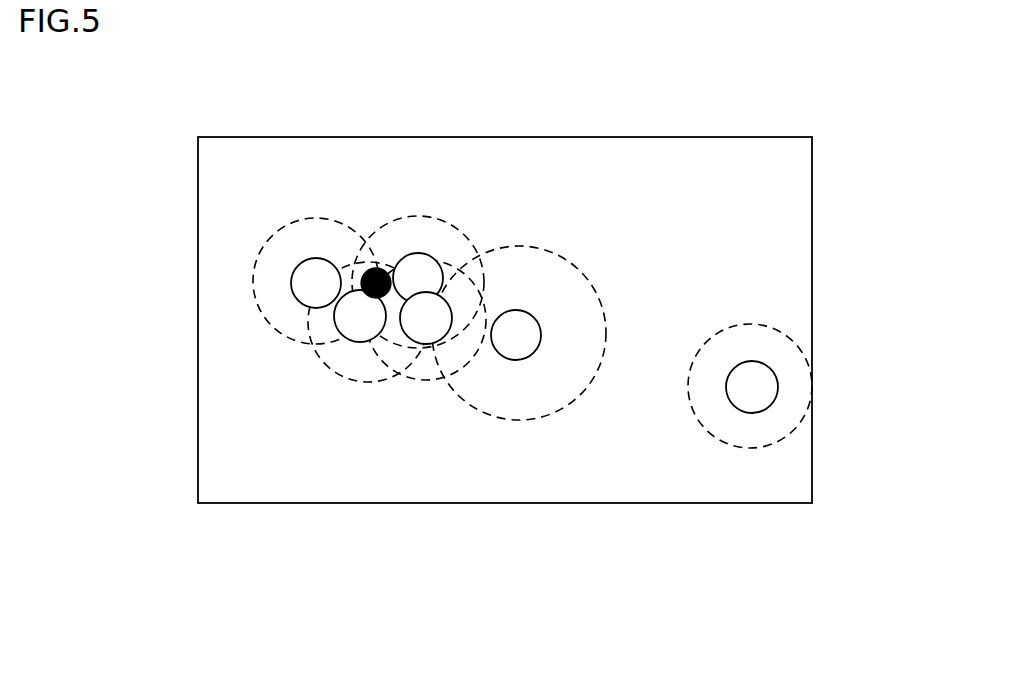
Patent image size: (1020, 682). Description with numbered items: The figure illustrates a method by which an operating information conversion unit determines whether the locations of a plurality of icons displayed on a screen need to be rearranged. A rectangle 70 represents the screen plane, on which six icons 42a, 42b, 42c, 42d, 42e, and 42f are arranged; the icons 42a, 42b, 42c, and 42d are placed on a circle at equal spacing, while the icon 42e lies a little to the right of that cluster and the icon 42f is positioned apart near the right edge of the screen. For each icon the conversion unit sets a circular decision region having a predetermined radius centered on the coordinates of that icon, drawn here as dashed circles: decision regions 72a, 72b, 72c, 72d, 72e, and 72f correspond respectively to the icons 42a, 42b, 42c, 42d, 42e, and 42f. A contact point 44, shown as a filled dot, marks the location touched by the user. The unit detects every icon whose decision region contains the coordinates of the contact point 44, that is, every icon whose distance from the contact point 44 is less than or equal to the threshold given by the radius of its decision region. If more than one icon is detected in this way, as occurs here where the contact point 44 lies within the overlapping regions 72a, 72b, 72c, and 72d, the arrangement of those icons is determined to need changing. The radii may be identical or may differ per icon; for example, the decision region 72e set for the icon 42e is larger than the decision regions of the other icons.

The rectangle 70 is at (813, 267).
The contact point 44 is at (363, 270).
The icon 42a is at (290, 279).
The icon 42b is at (410, 253).
The icon 42c is at (420, 344).
The icon 42d is at (340, 337).
The icon 42e is at (509, 311).
The icon 42f is at (778, 382).
The decision region 72a is at (263, 250).
The decision region 72b is at (385, 223).
The decision region 72c is at (375, 370).
The decision region 72d is at (325, 370).
The decision region 72e is at (560, 253).
The decision region 72f is at (745, 443).